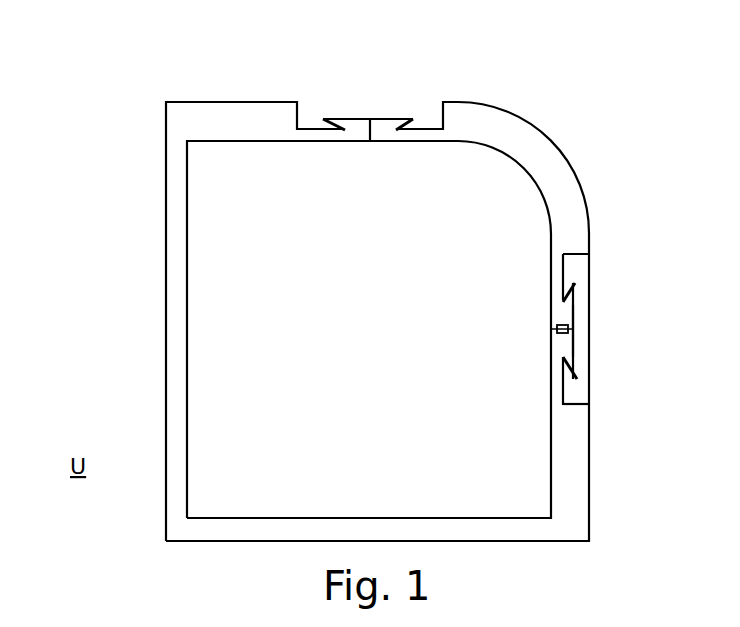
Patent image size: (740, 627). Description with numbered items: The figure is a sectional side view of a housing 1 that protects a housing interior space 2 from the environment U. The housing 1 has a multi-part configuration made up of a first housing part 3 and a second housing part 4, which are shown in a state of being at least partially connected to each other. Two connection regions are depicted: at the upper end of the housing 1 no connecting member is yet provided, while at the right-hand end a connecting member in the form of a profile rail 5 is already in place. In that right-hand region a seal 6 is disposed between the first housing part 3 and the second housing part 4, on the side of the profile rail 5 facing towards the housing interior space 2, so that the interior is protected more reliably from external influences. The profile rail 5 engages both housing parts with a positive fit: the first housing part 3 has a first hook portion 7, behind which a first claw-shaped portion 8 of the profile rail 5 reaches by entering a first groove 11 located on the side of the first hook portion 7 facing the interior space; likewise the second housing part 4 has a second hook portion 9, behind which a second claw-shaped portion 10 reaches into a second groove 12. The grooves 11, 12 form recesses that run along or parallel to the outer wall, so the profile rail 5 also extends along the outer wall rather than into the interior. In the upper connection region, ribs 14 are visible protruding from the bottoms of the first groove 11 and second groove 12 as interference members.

The housing 1 is at (130, 117).
The housing interior space 2 is at (378, 320).
The first housing part 3 is at (248, 120).
The second housing part 4 is at (520, 140).
The profile rail 5 is at (570, 328).
The seal 6 is at (583, 363).
The first hook portion 7 is at (333, 114).
The first claw-shaped portion 8 is at (590, 405).
The second hook portion 9 is at (410, 114).
The second claw-shaped portion 10 is at (550, 288).
The first groove 11 is at (322, 144).
The second groove 12 is at (432, 144).
The ribs 14 is at (401, 114).